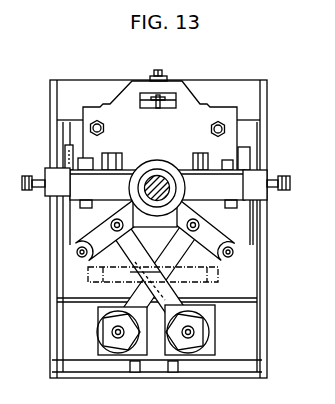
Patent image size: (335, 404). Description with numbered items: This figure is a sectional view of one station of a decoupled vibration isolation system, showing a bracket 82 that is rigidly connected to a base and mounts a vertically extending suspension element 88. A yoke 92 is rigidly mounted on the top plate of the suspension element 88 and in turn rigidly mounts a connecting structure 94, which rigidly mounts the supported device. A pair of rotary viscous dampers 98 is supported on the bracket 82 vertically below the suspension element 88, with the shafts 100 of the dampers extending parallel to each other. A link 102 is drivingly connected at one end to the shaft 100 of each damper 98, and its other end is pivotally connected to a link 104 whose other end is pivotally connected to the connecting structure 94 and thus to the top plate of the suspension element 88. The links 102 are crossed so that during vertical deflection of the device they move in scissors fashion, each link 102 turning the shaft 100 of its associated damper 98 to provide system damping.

The bracket 82 is at (268, 118).
The suspension element 88 is at (258, 237).
The yoke 92 is at (265, 199).
The connecting structure 94 is at (150, 131).
The rotary viscous damper 98 is at (97, 350).
The shaft 100 is at (114, 328).
The link 102 is at (98, 270).
The link 104 is at (108, 239).